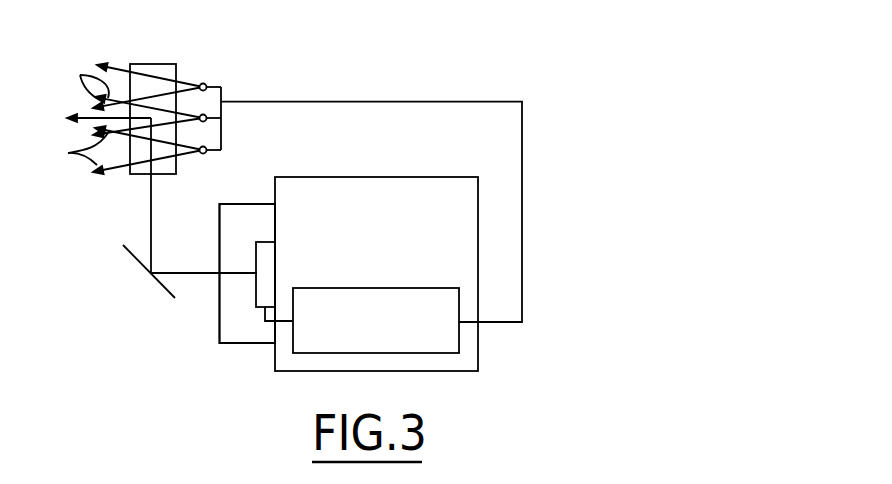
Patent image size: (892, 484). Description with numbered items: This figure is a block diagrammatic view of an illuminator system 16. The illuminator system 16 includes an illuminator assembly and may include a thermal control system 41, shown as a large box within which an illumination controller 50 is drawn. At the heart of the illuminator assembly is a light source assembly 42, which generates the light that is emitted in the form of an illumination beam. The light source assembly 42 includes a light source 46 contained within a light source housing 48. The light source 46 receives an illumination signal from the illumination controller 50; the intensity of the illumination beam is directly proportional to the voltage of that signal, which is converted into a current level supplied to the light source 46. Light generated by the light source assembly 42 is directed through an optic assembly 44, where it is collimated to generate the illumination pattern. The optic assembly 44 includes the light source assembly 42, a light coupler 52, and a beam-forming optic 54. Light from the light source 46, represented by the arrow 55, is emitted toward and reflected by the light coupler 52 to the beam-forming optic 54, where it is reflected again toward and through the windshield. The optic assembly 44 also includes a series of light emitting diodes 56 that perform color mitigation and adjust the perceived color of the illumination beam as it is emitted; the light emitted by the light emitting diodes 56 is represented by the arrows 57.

The illuminator system 16 is at (582, 115).
The thermal control system 41 is at (397, 371).
The light source assembly 42 is at (237, 344).
The optic assembly 44 is at (91, 208).
The light source 46 is at (255, 252).
The light source housing 48 is at (240, 202).
The illumination controller 50 is at (377, 288).
The light coupler 52 is at (133, 263).
The beam-forming optic 54 is at (153, 64).
The arrow representing light from the light source 55 is at (180, 272).
The light emitting diodes 56 is at (214, 82).
The arrows representing light emitted by the LEDs 57 is at (76, 112).